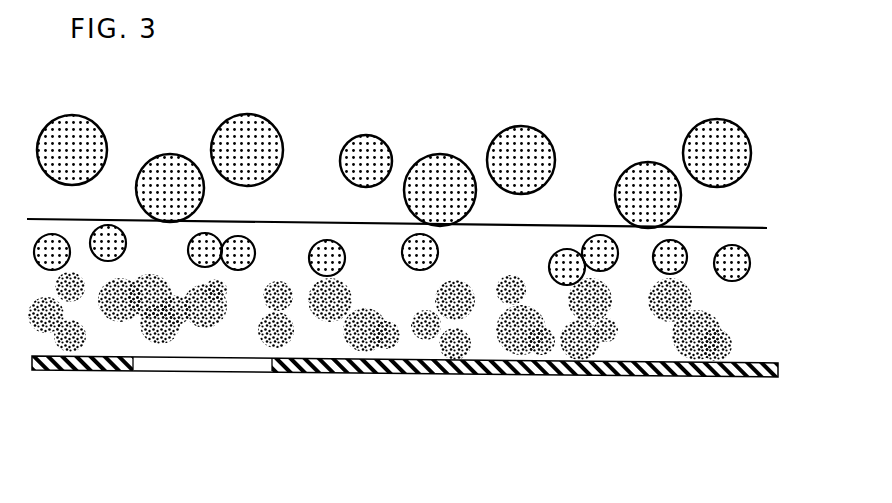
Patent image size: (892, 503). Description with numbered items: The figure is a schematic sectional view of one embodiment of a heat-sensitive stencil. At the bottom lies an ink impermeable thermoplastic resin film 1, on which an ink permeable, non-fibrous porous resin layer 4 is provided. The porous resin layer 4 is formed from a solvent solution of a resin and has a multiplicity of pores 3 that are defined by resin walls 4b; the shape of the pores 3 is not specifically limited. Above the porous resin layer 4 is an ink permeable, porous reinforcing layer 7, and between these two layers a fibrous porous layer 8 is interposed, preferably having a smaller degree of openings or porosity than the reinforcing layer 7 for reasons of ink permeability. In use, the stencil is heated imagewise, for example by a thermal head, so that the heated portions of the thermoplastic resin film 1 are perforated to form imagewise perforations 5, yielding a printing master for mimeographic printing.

The ink impermeable thermoplastic resin film 1 is at (778, 377).
The pores 3 is at (481, 356).
The porous resin layer 4 is at (413, 353).
The resin walls 4b is at (548, 345).
The imagewise perforations 5 is at (206, 370).
The porous reinforcing layer 7 is at (764, 123).
The fibrous porous layer 8 is at (764, 285).